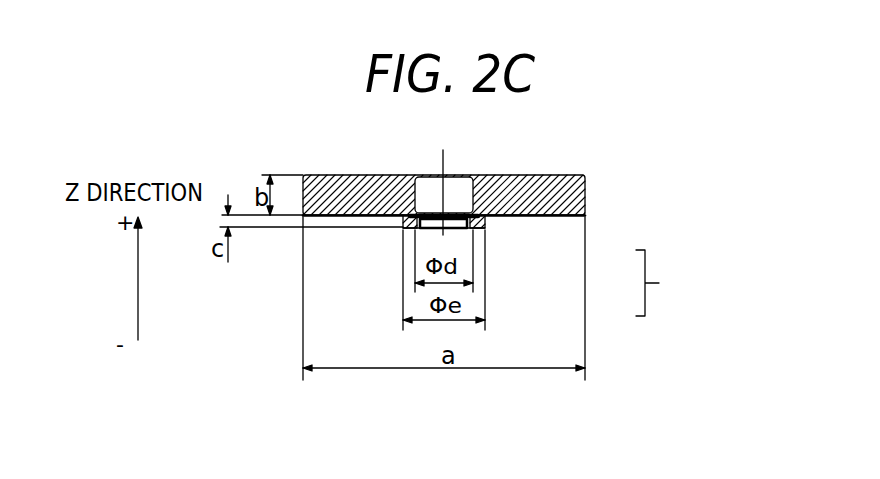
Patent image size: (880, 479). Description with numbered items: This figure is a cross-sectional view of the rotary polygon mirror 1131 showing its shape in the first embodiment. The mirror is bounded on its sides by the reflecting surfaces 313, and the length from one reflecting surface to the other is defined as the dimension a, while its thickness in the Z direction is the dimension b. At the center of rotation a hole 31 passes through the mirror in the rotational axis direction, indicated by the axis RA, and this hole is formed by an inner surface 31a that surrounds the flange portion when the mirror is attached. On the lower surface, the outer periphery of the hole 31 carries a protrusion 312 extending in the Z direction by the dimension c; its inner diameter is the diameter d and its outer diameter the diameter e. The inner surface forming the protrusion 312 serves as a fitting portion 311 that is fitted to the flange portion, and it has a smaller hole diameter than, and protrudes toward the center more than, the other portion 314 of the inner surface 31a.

The reflecting surfaces 313 is at (305, 210).
The hole 31 is at (436, 192).
The fitting portion 311 is at (485, 220).
The other portion 314 is at (510, 216).
The protrusion 312 is at (404, 227).
The inner surface 31a is at (671, 283).
The rotation axis RA is at (443, 160).
The rotary polygon mirror 1131 is at (327, 175).